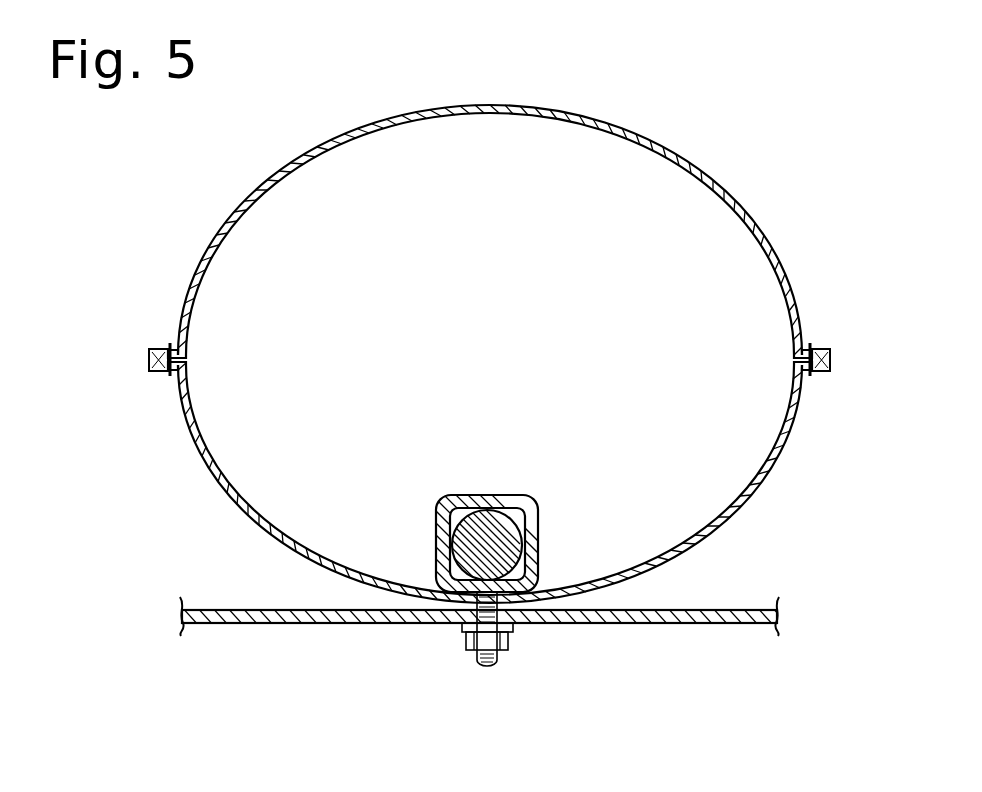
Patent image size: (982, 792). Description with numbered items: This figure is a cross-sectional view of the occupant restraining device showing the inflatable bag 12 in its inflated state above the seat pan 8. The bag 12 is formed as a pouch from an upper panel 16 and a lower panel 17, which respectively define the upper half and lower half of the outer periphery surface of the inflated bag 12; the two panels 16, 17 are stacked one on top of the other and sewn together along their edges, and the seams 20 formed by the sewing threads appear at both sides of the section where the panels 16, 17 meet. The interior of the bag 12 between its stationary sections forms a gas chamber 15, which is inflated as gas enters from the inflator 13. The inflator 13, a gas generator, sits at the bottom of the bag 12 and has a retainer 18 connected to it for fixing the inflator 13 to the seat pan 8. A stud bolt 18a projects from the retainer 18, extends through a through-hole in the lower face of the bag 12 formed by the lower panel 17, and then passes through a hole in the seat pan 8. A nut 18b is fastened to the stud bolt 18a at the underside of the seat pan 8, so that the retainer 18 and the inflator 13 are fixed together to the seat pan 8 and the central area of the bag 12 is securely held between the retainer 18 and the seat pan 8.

The inflatable bag 12 is at (633, 95).
The upper panel 16 is at (702, 170).
The lower panel 17 is at (758, 484).
The seam 20 is at (168, 347).
The gas chamber 15 is at (425, 352).
The inflator 13 is at (440, 510).
The retainer 18 is at (533, 498).
The stud bolt 18a is at (488, 668).
The nut 18b is at (510, 643).
The seat pan 8 is at (737, 623).